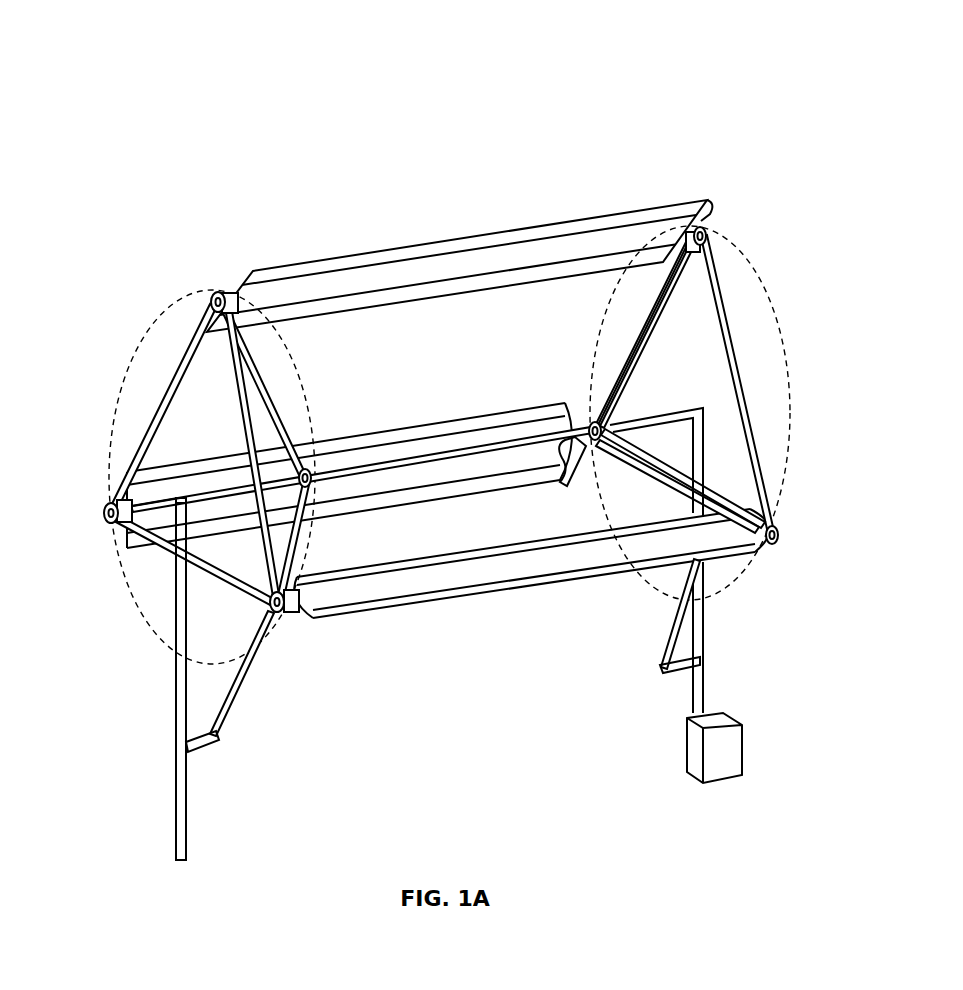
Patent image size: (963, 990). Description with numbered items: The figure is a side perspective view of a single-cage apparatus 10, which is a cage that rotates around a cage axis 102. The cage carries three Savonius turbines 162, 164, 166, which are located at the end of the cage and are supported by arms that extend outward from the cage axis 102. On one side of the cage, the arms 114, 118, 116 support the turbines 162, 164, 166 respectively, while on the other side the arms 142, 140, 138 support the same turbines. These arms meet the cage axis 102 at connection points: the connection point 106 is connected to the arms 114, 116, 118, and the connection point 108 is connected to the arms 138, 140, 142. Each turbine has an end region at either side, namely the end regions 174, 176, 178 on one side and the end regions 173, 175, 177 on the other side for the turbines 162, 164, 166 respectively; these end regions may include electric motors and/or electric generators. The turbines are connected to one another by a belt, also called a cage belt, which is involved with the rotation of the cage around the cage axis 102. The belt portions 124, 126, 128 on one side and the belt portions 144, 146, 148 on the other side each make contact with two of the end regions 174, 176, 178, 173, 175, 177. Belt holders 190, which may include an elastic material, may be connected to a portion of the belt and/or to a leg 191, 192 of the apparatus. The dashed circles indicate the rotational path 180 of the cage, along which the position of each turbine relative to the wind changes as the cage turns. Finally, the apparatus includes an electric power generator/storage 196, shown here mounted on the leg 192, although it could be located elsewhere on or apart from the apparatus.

The apparatus 10 is at (192, 97).
The cage axis 102 is at (476, 447).
The connection point 106 is at (312, 468).
The connection point 108 is at (583, 425).
The arm 114 is at (287, 398).
The arm 116 is at (312, 535).
The arm 118 is at (147, 500).
The belt portion 124 is at (267, 533).
The belt portion 126 is at (185, 347).
The belt portion 128 is at (158, 554).
The arm 138 is at (718, 497).
The arm 140 is at (560, 460).
The arm 142 is at (644, 345).
The belt portion 144 is at (604, 373).
The belt portion 146 is at (617, 468).
The belt portion 148 is at (723, 292).
The turbine 162 is at (368, 247).
The turbine 164 is at (410, 430).
The turbine 166 is at (383, 612).
The end region 173 is at (693, 248).
The end region 174 is at (221, 296).
The end region 175 is at (614, 420).
The end region 176 is at (105, 508).
The end region 177 is at (782, 540).
The end region 178 is at (278, 612).
The rotational path 180 is at (118, 385).
The belt holder 190 is at (228, 712).
The leg 191 is at (172, 700).
The leg 192 is at (710, 625).
The electric power generator/storage 196 is at (714, 748).